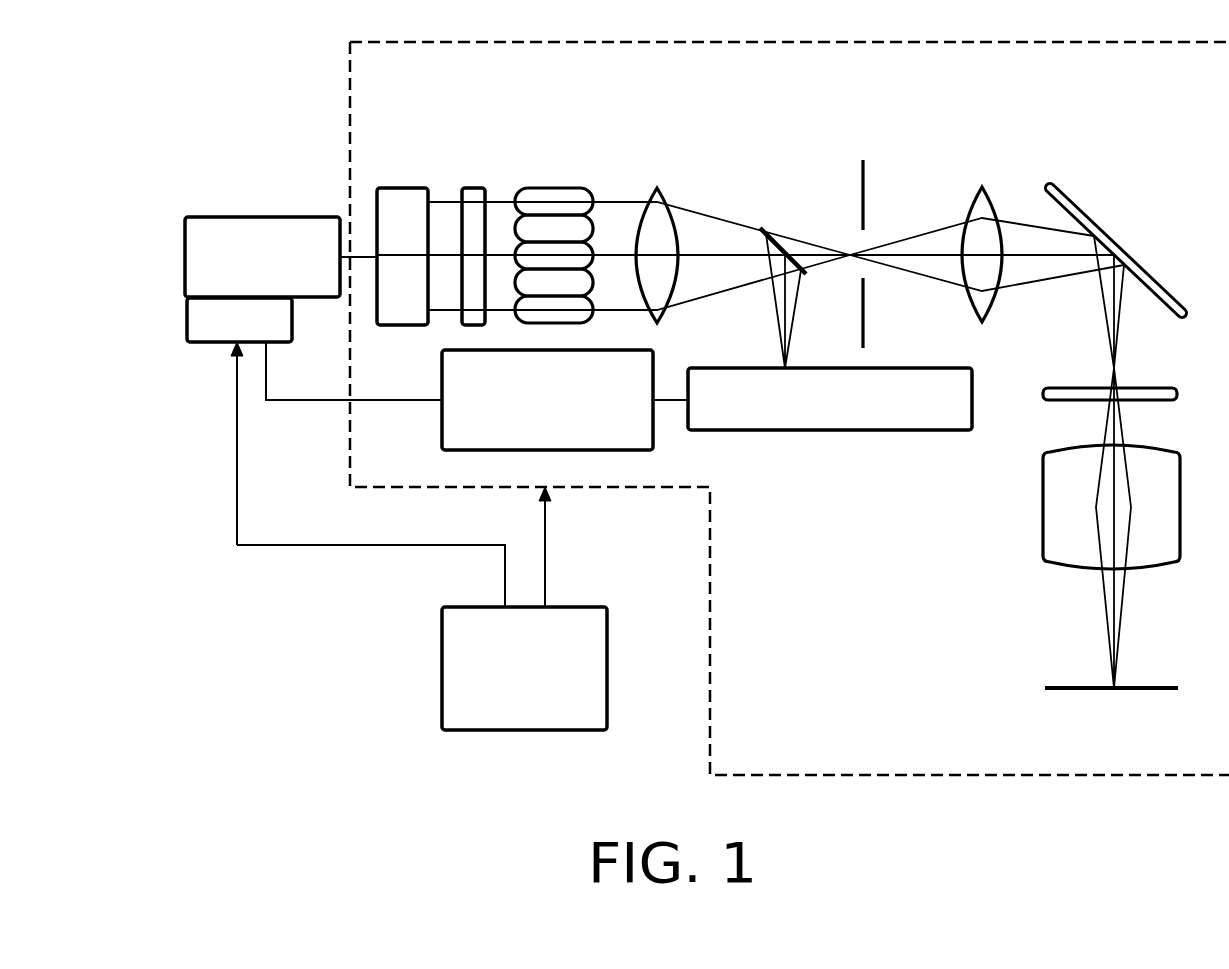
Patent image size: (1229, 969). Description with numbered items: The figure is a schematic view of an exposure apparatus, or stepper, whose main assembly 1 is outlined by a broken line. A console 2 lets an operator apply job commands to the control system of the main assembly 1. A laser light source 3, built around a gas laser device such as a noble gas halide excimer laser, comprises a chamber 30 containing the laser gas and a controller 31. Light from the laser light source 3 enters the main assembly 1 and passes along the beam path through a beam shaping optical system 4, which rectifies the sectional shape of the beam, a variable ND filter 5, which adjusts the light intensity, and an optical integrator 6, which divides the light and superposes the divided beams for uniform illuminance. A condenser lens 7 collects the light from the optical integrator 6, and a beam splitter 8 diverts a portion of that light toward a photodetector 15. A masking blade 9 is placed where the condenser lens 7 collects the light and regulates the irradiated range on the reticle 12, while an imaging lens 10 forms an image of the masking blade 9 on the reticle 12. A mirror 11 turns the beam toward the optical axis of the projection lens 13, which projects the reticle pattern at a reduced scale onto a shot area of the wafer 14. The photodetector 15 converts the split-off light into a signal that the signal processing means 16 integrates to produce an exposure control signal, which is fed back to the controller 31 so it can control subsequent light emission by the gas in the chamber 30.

The main assembly 1 is at (350, 95).
The console 2 is at (442, 663).
The laser light source 3 is at (220, 248).
The beam shaping optical system 4 is at (397, 188).
The variable ND filter 5 is at (473, 188).
The optical integrator 6 is at (560, 188).
The condenser lens 7 is at (657, 188).
The beam splitter 8 is at (766, 228).
The masking blade 9 is at (863, 180).
The imaging lens 10 is at (985, 187).
The mirror 11 is at (1095, 222).
The reticle 12 is at (1068, 388).
The projection lens 13 is at (1043, 505).
The wafer 14 is at (1060, 687).
The photodetector 15 is at (840, 432).
The signal processing means 16 is at (442, 420).
The chamber 30 is at (185, 248).
The controller 31 is at (187, 322).